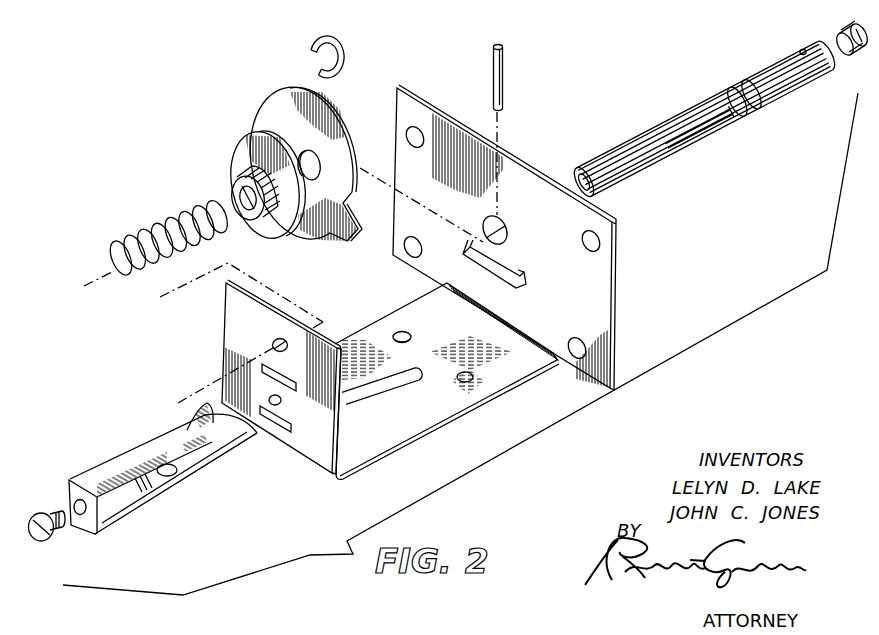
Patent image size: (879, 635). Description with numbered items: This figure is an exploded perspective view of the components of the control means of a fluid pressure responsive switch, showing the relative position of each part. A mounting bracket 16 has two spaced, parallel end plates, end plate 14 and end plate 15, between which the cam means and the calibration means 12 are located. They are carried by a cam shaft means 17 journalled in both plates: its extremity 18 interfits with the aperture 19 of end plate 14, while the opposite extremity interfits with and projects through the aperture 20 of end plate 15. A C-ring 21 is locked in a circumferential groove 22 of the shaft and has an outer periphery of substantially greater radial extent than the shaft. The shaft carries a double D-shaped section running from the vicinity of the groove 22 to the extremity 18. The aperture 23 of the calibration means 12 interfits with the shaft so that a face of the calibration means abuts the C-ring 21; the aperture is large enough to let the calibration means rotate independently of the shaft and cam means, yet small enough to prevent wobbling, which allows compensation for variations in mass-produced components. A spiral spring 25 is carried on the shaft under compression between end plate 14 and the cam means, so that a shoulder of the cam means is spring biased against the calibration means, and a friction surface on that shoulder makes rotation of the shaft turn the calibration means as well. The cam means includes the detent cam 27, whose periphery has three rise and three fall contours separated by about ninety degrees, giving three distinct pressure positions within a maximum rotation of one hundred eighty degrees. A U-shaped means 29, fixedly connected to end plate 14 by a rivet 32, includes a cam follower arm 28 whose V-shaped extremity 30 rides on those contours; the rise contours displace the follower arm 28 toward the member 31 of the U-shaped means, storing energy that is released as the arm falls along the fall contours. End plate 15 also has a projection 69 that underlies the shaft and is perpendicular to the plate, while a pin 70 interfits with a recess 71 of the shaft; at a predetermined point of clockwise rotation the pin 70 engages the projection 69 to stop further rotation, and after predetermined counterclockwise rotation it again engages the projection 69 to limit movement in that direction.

The calibration means 12 is at (267, 103).
The end plate 14 is at (232, 313).
The end plate 15 is at (600, 297).
The mounting bracket 16 is at (429, 416).
The cam shaft means 17 is at (770, 78).
The extremity 18 is at (576, 173).
The aperture 19 is at (275, 343).
The aperture 20 is at (508, 233).
The C-ring 21 is at (313, 40).
The circumferential groove 22 is at (752, 112).
The aperture 23 is at (306, 168).
The spiral spring 25 is at (150, 230).
The detent cam 27 is at (245, 133).
The cam follower arm 28 is at (177, 430).
The U-shaped means 29 is at (127, 533).
The V-shaped extremity 30 is at (196, 415).
The member 31 is at (200, 475).
The rivet 32 is at (37, 500).
The projection 69 is at (512, 282).
The pin 70 is at (500, 72).
The recess 71 is at (803, 49).